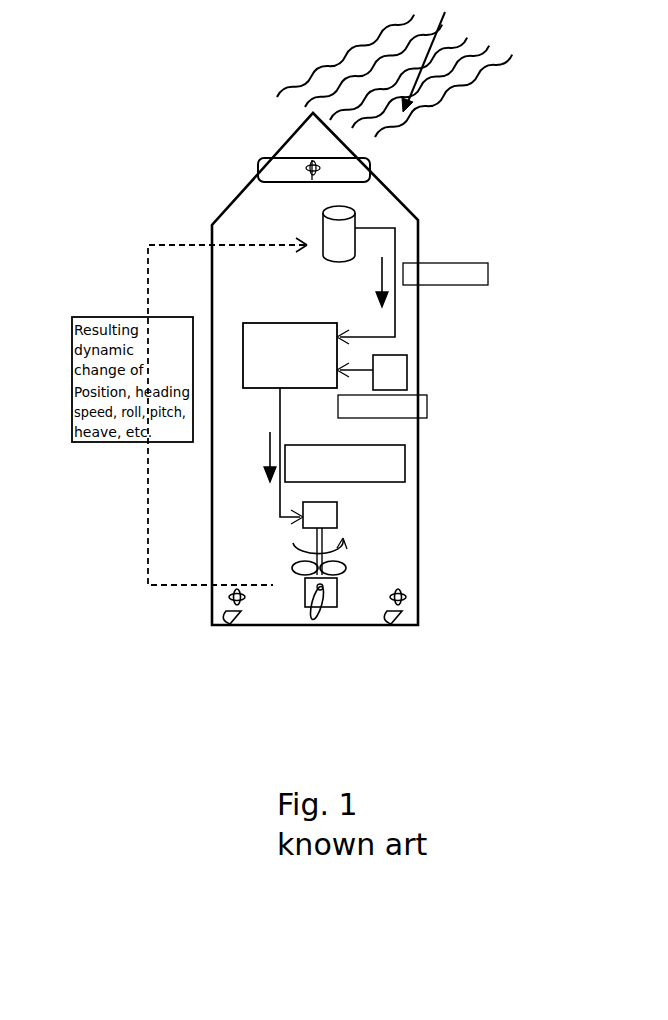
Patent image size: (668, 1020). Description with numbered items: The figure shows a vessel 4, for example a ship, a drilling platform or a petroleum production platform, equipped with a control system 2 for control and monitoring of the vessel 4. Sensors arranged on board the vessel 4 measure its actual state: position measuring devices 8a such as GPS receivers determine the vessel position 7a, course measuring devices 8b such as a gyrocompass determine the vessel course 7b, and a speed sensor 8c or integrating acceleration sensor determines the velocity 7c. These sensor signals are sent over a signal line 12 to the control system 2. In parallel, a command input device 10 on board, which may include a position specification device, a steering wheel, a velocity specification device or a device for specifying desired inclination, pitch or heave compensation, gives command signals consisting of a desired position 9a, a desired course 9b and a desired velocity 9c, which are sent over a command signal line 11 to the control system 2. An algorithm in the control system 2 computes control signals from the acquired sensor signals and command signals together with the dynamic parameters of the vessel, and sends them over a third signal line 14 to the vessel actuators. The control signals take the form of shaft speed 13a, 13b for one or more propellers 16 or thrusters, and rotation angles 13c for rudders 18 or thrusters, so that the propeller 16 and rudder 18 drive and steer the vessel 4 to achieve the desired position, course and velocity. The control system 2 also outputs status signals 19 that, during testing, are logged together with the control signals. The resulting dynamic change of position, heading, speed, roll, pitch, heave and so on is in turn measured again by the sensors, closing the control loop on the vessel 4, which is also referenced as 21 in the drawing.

The control system 2 is at (290, 355).
The vessel 4 is at (242, 172).
The vessel position 7a is at (432, 282).
The vessel course 7b is at (432, 282).
The velocity 7c is at (432, 282).
The position measuring device 8a is at (200, 220).
The course measuring device 8b is at (200, 220).
The speed sensor 8c is at (313, 228).
The desired position 9a is at (382, 406).
The desired course 9b is at (382, 406).
The desired velocity 9c is at (382, 406).
The command input device 10 is at (408, 370).
The command signal line 11 is at (355, 370).
The signal line 12 is at (395, 222).
The shaft speed signal 13a is at (334, 457).
The shaft speed signal 13b is at (334, 457).
The rotation angle signal 13c is at (334, 457).
The third signal line 14 is at (280, 415).
The propeller 16 is at (335, 552).
The rudder 18 is at (337, 593).
The status signals 19 is at (286, 550).
The hull 21 is at (307, 633).